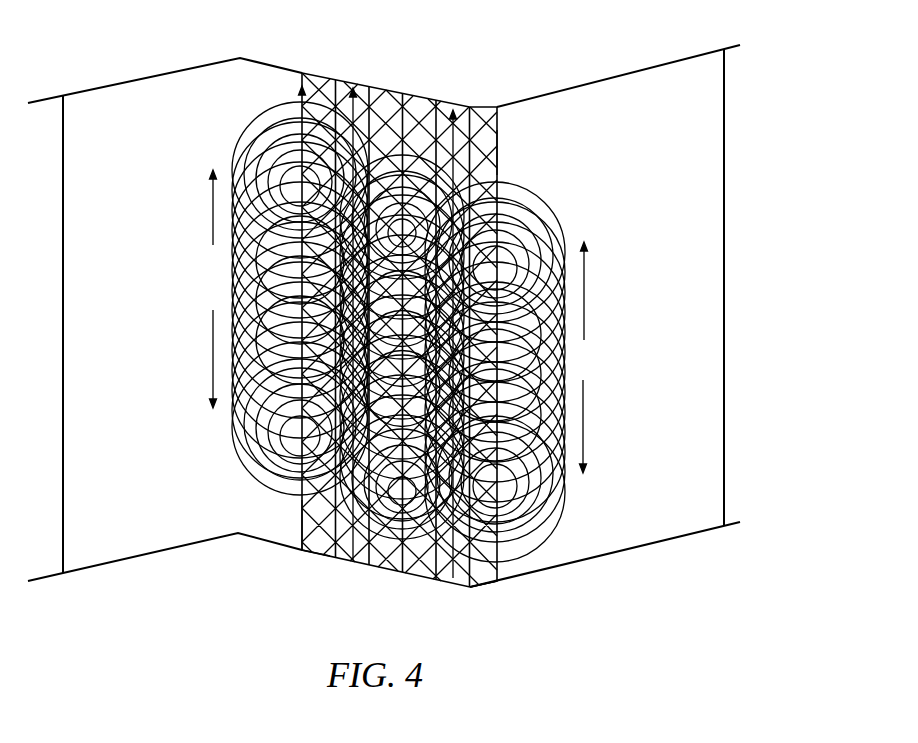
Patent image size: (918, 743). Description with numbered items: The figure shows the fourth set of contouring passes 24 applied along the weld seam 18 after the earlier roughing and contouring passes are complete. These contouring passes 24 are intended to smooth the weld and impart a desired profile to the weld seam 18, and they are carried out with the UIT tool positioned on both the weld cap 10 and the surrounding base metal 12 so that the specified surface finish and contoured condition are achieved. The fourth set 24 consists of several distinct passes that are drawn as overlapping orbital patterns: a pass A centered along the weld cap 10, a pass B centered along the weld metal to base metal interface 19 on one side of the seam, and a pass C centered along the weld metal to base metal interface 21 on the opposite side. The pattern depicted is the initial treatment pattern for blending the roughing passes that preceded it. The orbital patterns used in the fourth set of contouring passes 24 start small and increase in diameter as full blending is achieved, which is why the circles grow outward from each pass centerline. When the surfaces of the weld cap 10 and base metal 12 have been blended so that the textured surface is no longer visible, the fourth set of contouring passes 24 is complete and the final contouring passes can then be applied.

The weld cap 10 is at (446, 583).
The base metal 12 is at (278, 83).
The weld seam 18 is at (281, 507).
The weld metal to base metal interface 19 is at (297, 535).
The weld metal to base metal interface 21 is at (502, 575).
The fourth set of contouring passes 24 is at (506, 152).
The pass A is at (417, 152).
The pass B is at (232, 146).
The pass C is at (560, 222).